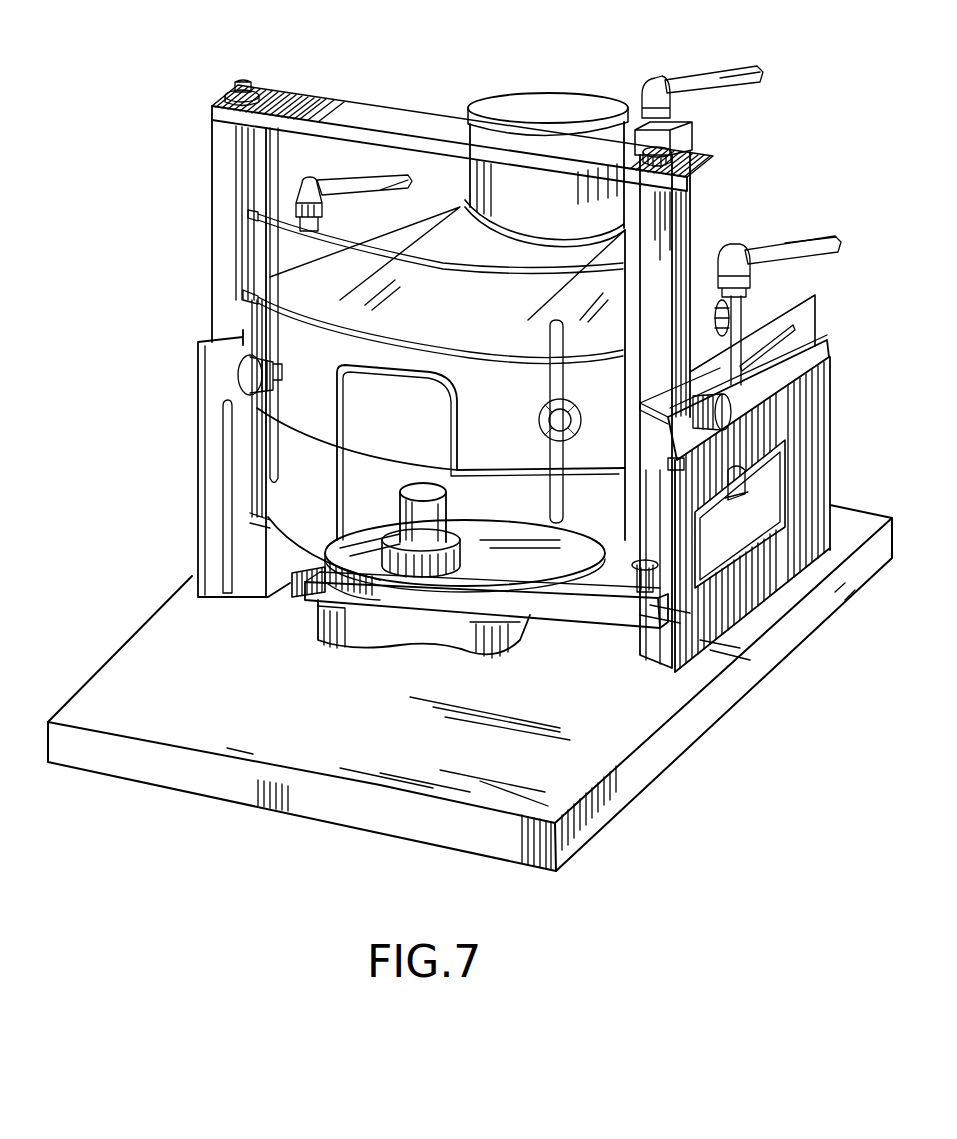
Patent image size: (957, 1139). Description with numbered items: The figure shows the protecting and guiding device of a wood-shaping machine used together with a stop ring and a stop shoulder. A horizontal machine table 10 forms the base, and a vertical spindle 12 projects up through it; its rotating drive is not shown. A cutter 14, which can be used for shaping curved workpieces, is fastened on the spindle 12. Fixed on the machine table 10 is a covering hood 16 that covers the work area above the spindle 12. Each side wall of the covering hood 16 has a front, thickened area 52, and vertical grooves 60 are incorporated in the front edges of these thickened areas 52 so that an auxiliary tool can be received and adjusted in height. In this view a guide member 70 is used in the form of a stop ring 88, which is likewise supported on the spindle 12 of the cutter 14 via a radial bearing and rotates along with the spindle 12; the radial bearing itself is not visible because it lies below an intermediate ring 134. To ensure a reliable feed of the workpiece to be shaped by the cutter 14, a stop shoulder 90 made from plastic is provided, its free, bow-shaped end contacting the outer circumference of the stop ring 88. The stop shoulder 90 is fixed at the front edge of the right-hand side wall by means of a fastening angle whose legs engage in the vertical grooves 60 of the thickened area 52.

The machine table 10 is at (248, 712).
The spindle 12 is at (428, 500).
The cutter 14 is at (437, 648).
The covering hood 16 is at (417, 69).
The thickened area 52 is at (637, 654).
The vertical grooves 60 is at (200, 584).
The guide member 70 is at (538, 551).
The stop ring 88 is at (335, 562).
The stop shoulder 90 is at (573, 607).
The intermediate ring 134 is at (412, 555).